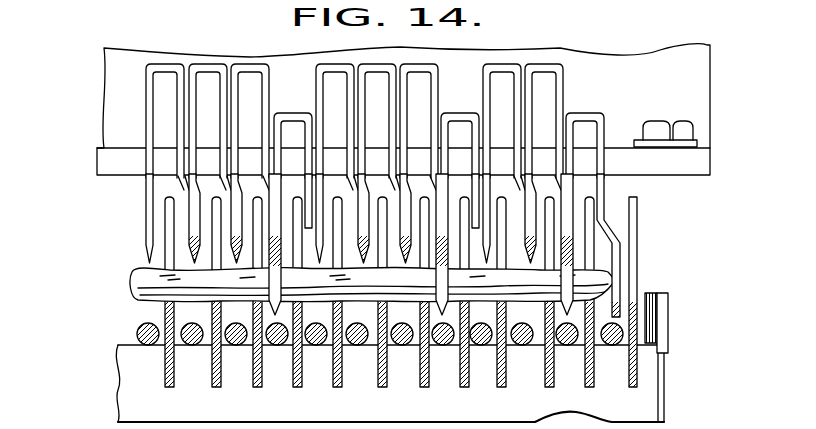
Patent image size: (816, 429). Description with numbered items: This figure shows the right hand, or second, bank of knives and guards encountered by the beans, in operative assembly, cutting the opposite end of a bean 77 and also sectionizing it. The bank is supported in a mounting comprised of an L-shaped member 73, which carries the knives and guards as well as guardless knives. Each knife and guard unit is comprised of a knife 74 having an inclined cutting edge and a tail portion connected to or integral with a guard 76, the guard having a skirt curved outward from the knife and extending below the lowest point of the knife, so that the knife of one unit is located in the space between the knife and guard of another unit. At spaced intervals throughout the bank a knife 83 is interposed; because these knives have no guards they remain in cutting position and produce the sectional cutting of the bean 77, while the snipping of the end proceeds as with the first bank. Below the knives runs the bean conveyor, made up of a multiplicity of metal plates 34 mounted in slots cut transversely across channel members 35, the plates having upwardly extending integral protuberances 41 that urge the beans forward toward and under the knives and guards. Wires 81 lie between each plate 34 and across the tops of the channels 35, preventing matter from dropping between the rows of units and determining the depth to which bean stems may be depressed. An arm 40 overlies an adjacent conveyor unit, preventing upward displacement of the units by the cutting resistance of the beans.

The metal plates 34 is at (220, 358).
The channel members 35 is at (97, 0).
The arm 40 is at (668, 318).
The protuberances 41 is at (638, 222).
The L-shaped member 73 is at (662, 62).
The knife 74 is at (145, 205).
The guard 76 is at (200, 224).
The bean 77 is at (132, 284).
The wires 81 is at (238, 346).
The knife 83 is at (293, 125).